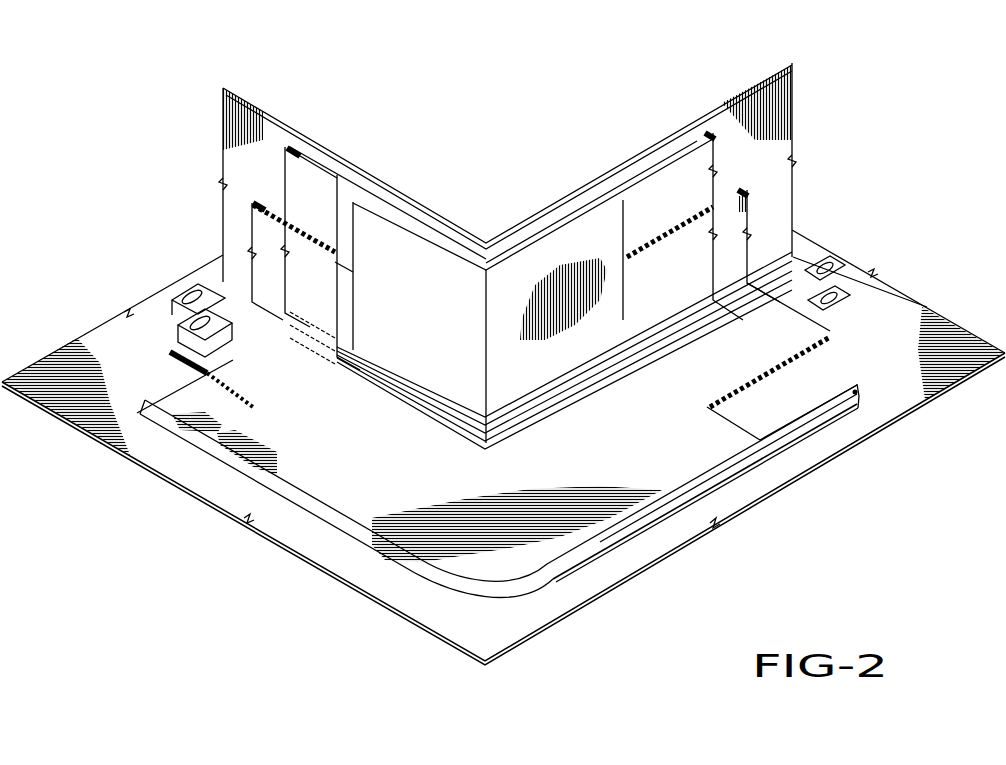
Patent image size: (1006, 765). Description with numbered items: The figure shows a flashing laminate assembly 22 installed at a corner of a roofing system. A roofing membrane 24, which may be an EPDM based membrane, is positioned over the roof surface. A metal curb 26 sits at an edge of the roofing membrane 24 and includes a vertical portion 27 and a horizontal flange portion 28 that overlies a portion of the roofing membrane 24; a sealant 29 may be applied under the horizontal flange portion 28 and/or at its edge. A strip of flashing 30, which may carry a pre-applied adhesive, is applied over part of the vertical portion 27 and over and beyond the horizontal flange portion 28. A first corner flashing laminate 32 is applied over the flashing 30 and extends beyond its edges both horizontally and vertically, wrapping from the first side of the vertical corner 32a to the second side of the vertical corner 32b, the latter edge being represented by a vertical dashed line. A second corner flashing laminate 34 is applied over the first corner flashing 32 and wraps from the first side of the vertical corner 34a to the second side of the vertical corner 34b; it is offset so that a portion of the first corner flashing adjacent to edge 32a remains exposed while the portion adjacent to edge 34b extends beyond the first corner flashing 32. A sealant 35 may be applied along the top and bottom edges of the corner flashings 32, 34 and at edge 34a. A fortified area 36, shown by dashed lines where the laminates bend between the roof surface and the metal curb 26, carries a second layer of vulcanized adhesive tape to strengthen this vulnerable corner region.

The flashing laminate assembly 22 is at (511, 160).
The roofing membrane 24 is at (946, 350).
The metal curb 26 is at (800, 104).
The vertical portion 27 is at (222, 133).
The horizontal flange portion 28 is at (232, 292).
The sealant 29 is at (830, 268).
The strip of flashing 30 is at (745, 220).
The first corner flashing laminate 32 is at (317, 200).
The first side of the vertical corner 32a is at (285, 148).
The second side of the vertical corner 32b is at (634, 210).
The second corner flashing laminate 34 is at (613, 478).
The first side of the vertical corner 34a is at (257, 432).
The second side of the vertical corner 34b is at (853, 381).
The sealant 35 is at (430, 203).
The fortified area 36 is at (402, 419).